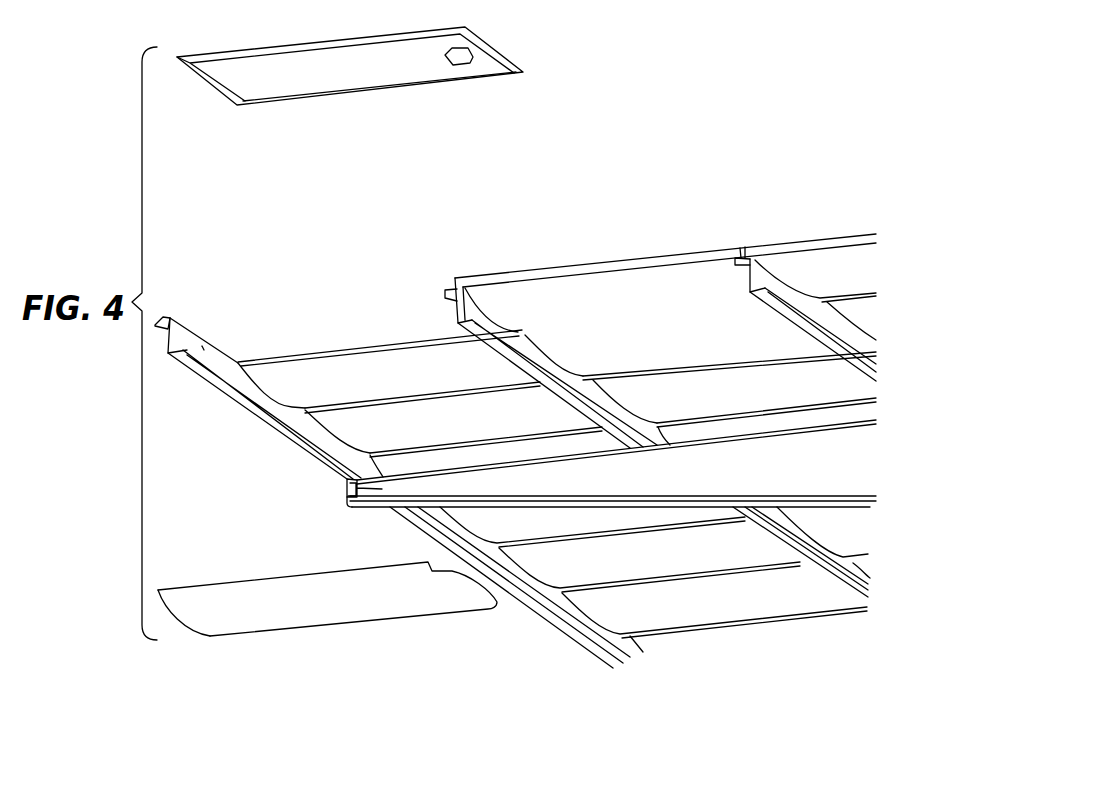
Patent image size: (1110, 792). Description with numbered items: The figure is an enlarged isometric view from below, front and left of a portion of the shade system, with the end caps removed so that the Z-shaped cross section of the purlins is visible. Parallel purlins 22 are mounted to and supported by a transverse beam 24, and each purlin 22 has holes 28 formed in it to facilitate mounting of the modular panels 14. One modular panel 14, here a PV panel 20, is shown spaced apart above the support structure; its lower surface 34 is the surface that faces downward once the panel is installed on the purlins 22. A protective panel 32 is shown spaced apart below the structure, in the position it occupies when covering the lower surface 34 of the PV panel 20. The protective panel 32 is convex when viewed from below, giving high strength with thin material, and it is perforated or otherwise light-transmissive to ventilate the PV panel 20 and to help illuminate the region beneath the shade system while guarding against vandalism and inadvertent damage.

The modular panel 14 is at (398, 85).
The PV panel 20 is at (398, 85).
The purlin 22 is at (258, 381).
The transverse beam 24 is at (347, 492).
The hole 28 is at (210, 345).
The protective panel 32 is at (297, 385).
The lower surface 34 is at (298, 78).